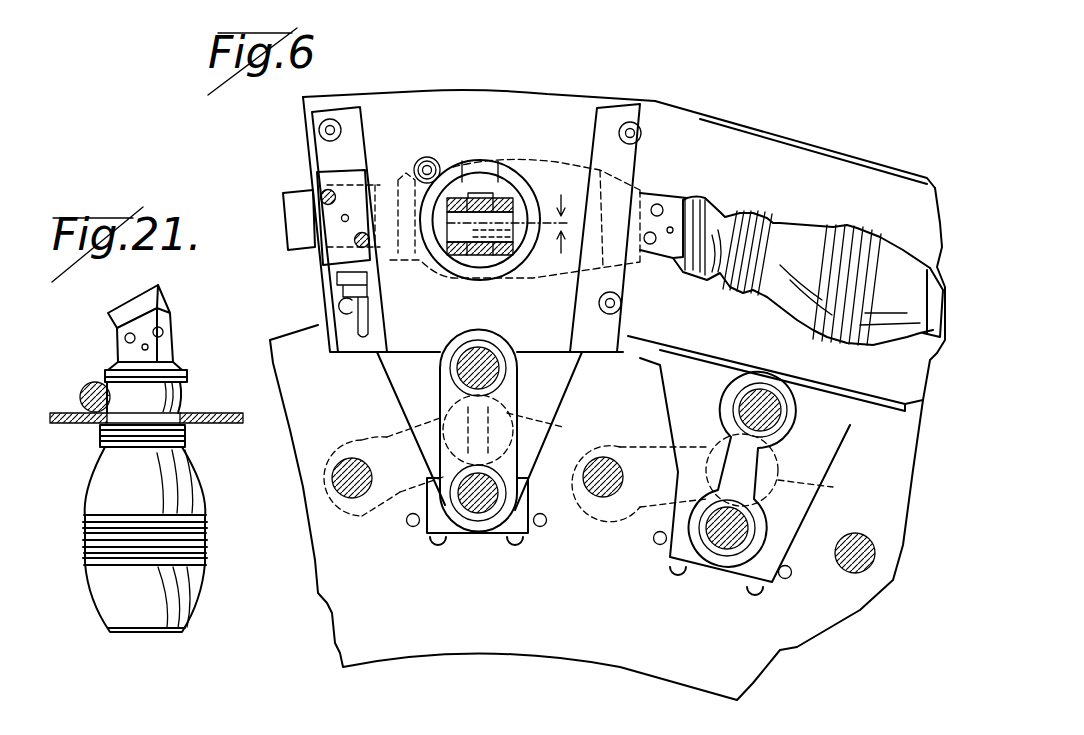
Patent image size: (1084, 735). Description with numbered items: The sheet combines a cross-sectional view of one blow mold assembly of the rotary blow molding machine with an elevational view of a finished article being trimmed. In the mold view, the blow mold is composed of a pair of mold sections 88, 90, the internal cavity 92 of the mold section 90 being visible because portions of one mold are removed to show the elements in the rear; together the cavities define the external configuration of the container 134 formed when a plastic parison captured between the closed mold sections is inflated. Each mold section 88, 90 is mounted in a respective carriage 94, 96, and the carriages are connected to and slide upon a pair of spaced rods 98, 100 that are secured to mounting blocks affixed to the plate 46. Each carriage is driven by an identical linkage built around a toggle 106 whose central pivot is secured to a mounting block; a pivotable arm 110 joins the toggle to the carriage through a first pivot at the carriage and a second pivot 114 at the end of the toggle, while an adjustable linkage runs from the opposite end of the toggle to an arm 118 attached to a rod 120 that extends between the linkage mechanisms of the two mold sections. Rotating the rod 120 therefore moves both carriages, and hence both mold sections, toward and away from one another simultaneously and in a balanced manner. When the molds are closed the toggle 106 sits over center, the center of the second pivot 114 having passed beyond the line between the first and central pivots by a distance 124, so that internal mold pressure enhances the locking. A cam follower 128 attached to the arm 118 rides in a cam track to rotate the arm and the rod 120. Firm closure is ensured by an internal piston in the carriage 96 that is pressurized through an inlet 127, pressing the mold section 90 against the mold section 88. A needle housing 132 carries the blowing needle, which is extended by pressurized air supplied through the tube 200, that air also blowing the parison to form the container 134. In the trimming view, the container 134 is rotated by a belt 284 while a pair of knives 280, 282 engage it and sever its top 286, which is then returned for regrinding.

In FIG. 6, the plate 46 is at (558, 620).
In FIG. 6, the mold section 88 is at (695, 135).
In FIG. 6, the mold section 90 is at (335, 97).
In FIG. 6, the cavity 92 is at (815, 225).
In FIG. 6, the carriage 94 is at (833, 150).
In FIG. 6, the carriage 96 is at (556, 104).
In FIG. 6, the spaced rod 98 is at (498, 373).
In FIG. 6, the spaced rod 100 is at (478, 505).
In FIG. 6, the toggle 106 is at (466, 262).
In FIG. 6, the pivotable arm 110 is at (482, 198).
In FIG. 6, the second pivot 114 is at (455, 223).
In FIG. 6, the arm 118 is at (387, 443).
In FIG. 6, the rod 120 is at (355, 495).
In FIG. 6, the distance 124 is at (570, 223).
In FIG. 6, the inlet 127 is at (427, 157).
In FIG. 6, the cam follower 128 is at (633, 451).
In FIG. 6, the needle housing 132 is at (322, 180).
In FIG. 6, the container 134 is at (547, 170).
In FIG. 21, the container 134 is at (103, 592).
In FIG. 6, the tube 200 is at (345, 306).
In FIG. 21, the knife 280 is at (218, 413).
In FIG. 21, the knife 282 is at (70, 427).
In FIG. 21, the belt 284 is at (95, 383).
In FIG. 21, the top 286 is at (172, 322).